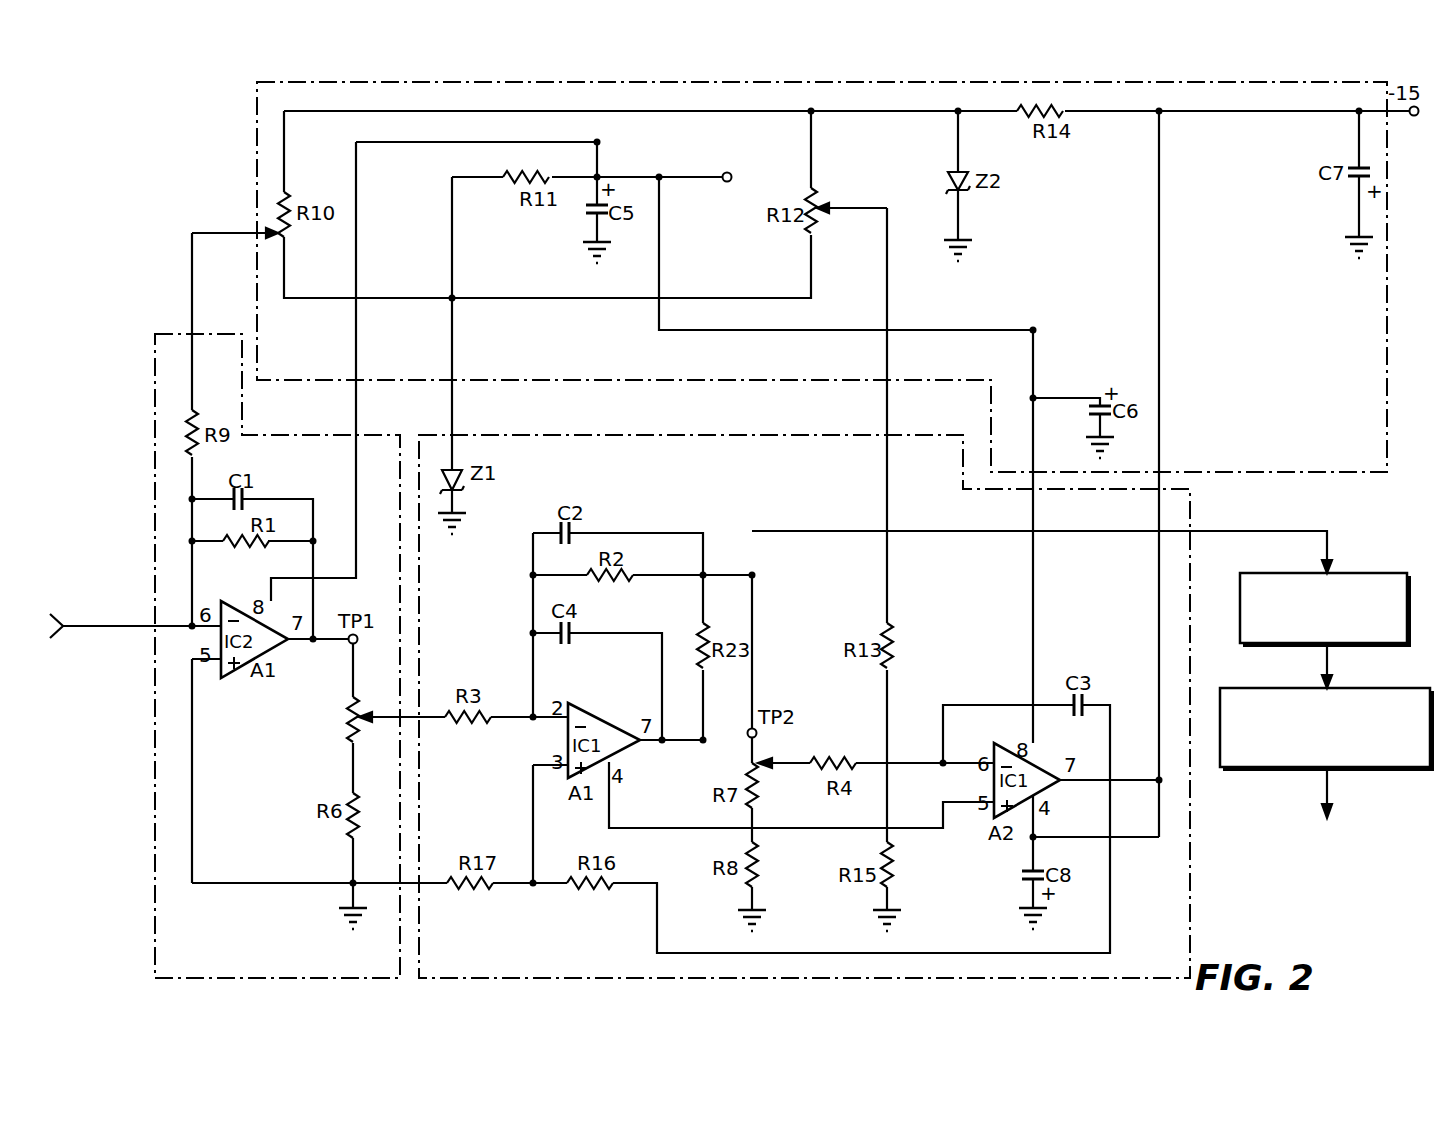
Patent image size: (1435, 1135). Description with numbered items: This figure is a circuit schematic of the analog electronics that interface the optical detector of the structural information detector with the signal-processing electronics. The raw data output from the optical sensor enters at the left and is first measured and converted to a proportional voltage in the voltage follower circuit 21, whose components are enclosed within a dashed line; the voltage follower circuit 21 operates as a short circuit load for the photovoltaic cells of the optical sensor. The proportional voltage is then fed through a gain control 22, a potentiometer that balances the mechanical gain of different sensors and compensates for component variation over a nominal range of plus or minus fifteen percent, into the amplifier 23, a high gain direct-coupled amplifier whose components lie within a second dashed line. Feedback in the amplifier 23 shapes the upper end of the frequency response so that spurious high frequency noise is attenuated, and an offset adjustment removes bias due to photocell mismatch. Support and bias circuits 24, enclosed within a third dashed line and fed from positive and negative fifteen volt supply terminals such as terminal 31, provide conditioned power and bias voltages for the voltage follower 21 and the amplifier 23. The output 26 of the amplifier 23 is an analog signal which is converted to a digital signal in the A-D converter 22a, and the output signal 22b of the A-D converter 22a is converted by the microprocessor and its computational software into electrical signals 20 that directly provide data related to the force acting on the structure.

The support and bias circuits 24 is at (257, 108).
The voltage follower circuit 21 is at (155, 737).
The amplifier 23 is at (1188, 504).
The +15 volt supply terminal 31 is at (740, 160).
The gain control 22 is at (368, 714).
The output 26 is at (1250, 531).
The A-D converter 22a is at (1346, 573).
The output signal 22b is at (1330, 662).
The electrical signals 20 is at (1332, 788).